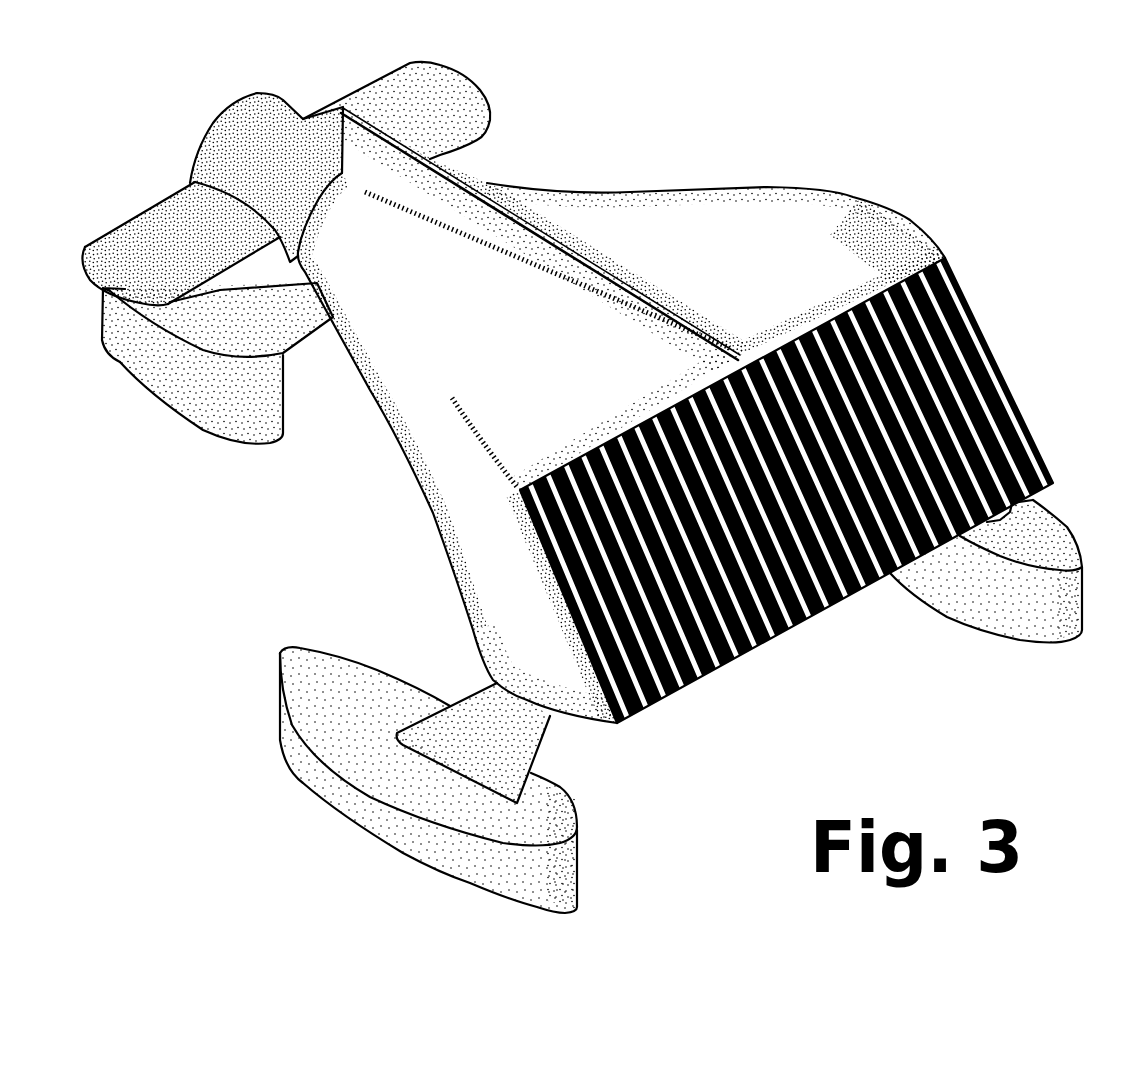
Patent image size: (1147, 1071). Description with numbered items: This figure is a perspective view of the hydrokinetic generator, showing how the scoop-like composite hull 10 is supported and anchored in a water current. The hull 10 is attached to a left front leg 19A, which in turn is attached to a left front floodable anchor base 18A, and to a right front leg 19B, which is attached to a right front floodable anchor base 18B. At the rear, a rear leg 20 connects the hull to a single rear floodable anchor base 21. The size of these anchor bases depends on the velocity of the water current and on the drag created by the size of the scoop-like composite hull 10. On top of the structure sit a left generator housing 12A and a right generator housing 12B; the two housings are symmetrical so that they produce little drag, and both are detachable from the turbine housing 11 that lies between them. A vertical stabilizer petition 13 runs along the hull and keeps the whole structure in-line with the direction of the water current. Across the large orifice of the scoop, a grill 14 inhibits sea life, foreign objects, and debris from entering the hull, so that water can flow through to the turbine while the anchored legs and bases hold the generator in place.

The scoop-like composite hull 10 is at (895, 212).
The turbine housing 11 is at (287, 112).
The left generator housing 12A is at (141, 218).
The right generator housing 12B is at (475, 93).
The vertical stabilizer petition 13 is at (457, 172).
The grill 14 is at (753, 637).
The left front floodable anchor base 18A is at (570, 807).
The right front floodable anchor base 18B is at (1083, 602).
The left front leg 19A is at (511, 754).
The right front leg 19B is at (1035, 500).
The rear leg 20 is at (284, 340).
The single rear floodable anchor base 21 is at (273, 403).